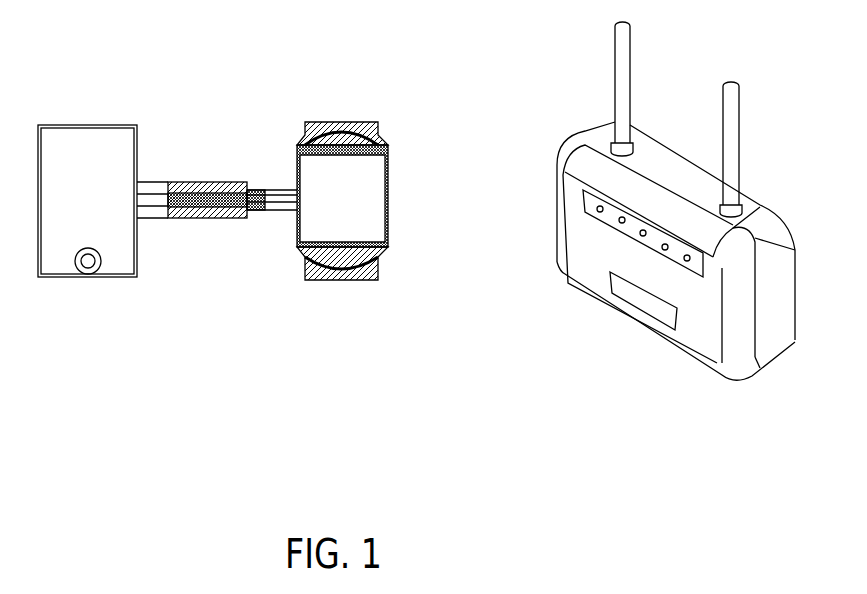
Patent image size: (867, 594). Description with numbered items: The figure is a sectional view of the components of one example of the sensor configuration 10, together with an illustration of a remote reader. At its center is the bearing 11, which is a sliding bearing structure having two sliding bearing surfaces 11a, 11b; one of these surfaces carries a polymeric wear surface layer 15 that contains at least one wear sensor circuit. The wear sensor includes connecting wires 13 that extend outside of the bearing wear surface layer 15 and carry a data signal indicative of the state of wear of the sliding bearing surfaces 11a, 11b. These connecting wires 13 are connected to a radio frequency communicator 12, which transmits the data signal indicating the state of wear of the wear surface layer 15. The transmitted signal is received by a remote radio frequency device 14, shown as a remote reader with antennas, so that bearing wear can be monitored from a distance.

The sensor configuration 10 is at (200, 60).
The bearing 11 is at (407, 190).
The sliding bearing surface 11a is at (357, 112).
The sliding bearing surface 11b is at (343, 279).
The radio frequency communicator 12 is at (62, 240).
The connecting wires 13 is at (213, 223).
The remote radio frequency device 14 is at (688, 335).
The polymeric wear surface layer 15 is at (385, 137).